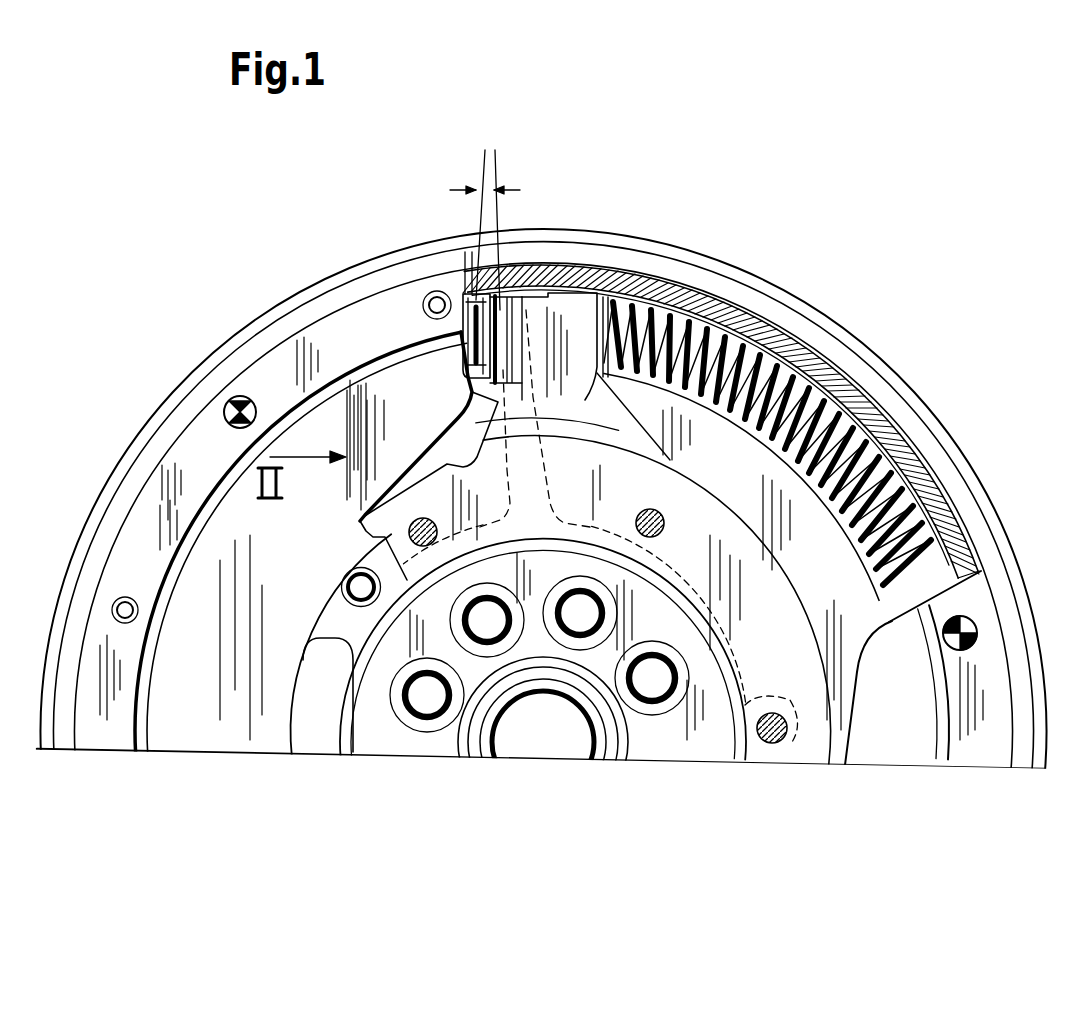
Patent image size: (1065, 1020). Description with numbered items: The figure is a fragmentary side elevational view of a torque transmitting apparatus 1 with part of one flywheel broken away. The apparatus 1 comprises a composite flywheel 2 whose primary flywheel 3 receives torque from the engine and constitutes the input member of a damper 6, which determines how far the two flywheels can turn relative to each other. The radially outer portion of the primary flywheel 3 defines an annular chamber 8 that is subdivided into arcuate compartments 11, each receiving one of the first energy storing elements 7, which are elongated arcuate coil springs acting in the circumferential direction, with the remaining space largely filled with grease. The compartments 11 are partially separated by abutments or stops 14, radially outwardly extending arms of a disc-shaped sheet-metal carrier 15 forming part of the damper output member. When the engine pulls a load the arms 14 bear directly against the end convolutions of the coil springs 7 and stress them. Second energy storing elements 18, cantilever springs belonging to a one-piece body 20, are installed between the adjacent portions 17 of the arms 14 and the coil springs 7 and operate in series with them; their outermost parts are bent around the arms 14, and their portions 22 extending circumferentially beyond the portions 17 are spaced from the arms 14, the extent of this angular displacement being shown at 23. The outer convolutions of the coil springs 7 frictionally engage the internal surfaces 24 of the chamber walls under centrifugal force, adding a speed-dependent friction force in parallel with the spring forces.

The apparatus 1 is at (694, 202).
The composite flywheel 2 is at (757, 283).
The primary flywheel 3 is at (290, 330).
The damper 6 is at (912, 448).
The first energy storing elements 7 is at (848, 425).
The annular chamber 8 is at (960, 527).
The arcuate compartments 11 is at (873, 417).
The abutments or stops (arms) 14 is at (563, 310).
The carrier 15 is at (803, 675).
The portions of the arms 17 is at (522, 317).
The second energy storing elements (cantilever springs) 18 is at (500, 395).
The one-piece body 20 is at (463, 373).
The portions of the cantilever springs 22 is at (455, 292).
The extent of angular displacement 23 is at (485, 213).
The internal surfaces 24 is at (778, 320).